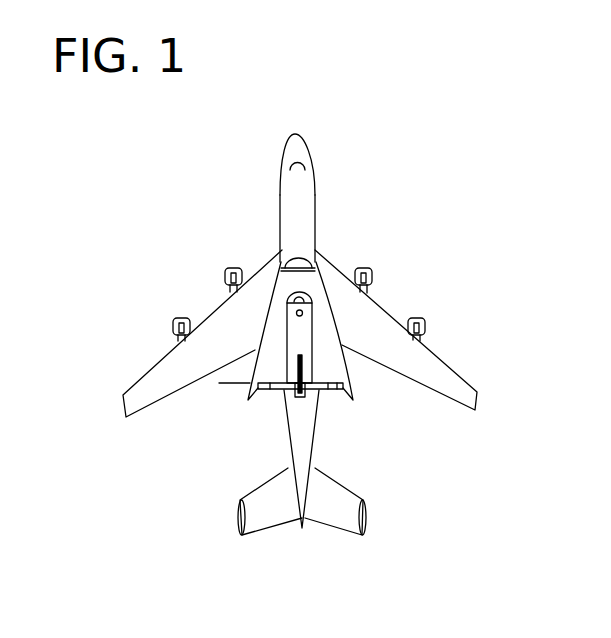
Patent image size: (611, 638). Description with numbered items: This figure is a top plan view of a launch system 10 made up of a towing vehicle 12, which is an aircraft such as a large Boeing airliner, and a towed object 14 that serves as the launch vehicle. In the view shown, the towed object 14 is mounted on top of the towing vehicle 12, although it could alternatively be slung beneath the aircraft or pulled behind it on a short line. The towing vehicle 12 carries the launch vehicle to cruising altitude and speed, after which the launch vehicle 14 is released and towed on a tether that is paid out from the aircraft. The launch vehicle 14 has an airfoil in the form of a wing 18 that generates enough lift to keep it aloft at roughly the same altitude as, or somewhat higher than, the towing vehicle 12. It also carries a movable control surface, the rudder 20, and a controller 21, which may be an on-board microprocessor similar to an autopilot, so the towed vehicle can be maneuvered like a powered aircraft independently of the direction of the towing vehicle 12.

The launch system 10 is at (349, 328).
The towing vehicle 12 is at (300, 190).
The towed object 14 is at (303, 333).
The wing 18 is at (330, 358).
The rudder 20 is at (293, 368).
The controller 21 is at (288, 258).